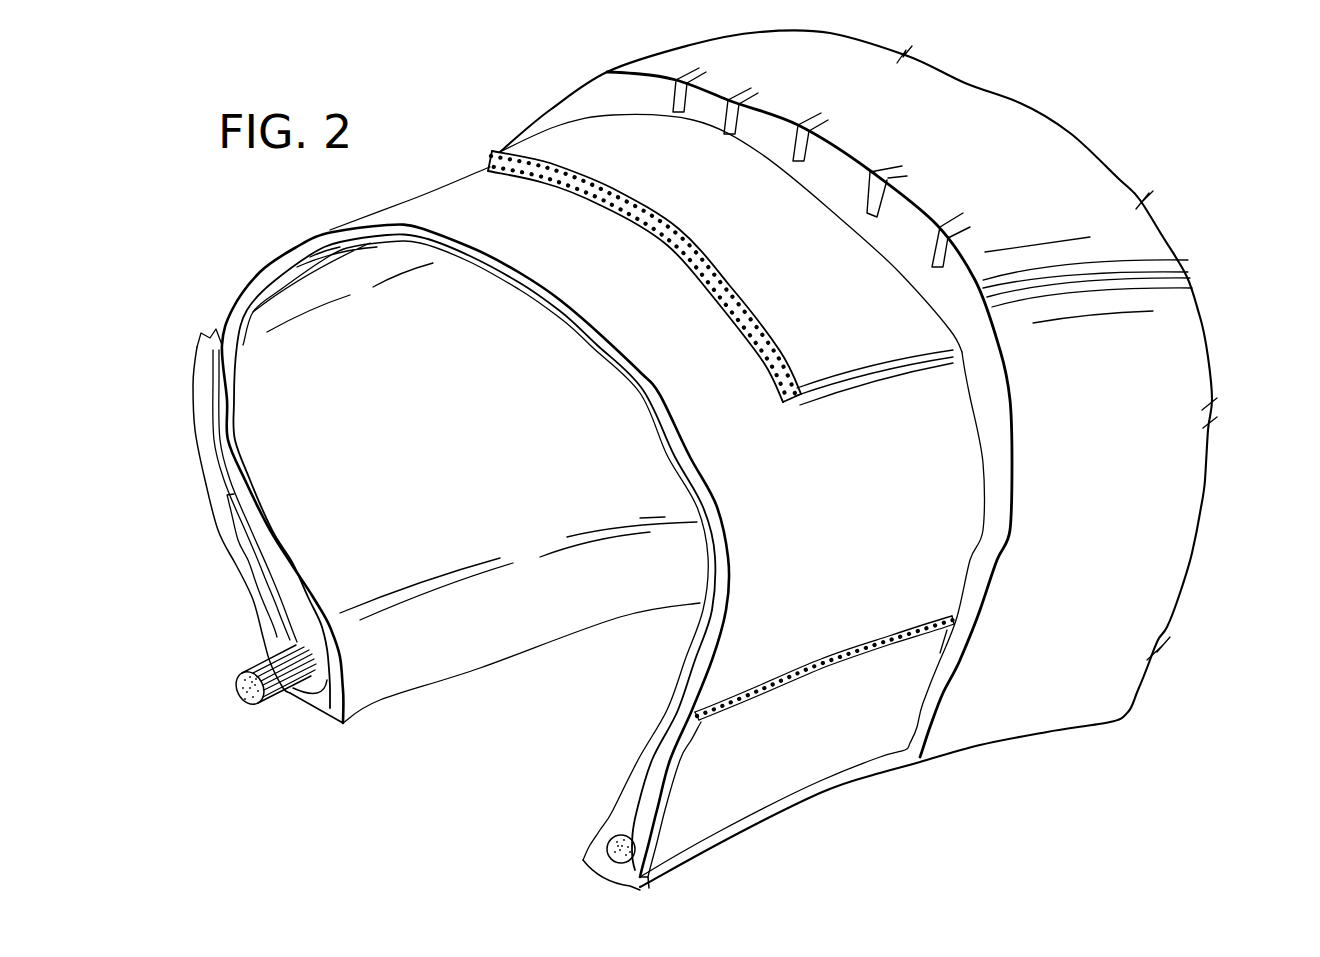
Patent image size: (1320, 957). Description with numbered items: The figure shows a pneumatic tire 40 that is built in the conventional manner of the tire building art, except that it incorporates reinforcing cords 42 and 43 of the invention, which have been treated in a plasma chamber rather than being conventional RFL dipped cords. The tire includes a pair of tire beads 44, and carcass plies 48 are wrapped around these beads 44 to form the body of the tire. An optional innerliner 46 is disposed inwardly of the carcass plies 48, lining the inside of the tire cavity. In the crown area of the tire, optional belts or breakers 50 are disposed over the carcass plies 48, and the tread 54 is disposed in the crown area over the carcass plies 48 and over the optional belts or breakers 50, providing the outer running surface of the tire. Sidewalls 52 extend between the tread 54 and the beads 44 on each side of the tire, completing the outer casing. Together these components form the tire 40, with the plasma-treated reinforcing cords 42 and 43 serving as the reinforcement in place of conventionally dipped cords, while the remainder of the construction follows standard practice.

The pneumatic tire 40 is at (382, 835).
The reinforcing cord 42 is at (803, 668).
The reinforcing cord 43 is at (770, 372).
The tire bead 44 is at (247, 690).
The innerliner 46 is at (228, 425).
The carcass ply 48 is at (270, 270).
The belt or breaker 50 is at (548, 153).
The sidewall 52 is at (203, 378).
The tread 54 is at (867, 150).